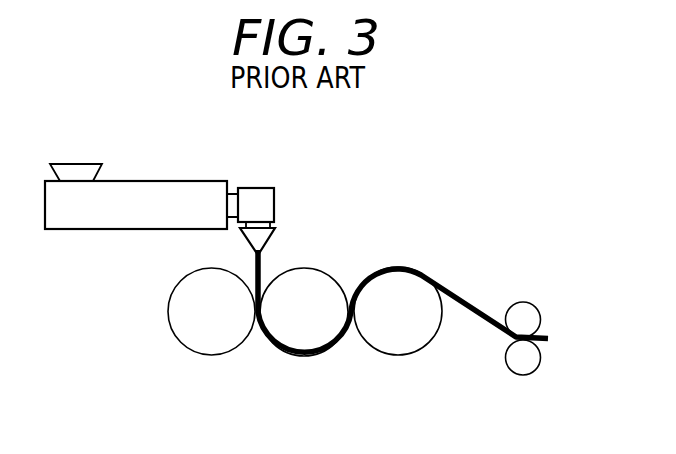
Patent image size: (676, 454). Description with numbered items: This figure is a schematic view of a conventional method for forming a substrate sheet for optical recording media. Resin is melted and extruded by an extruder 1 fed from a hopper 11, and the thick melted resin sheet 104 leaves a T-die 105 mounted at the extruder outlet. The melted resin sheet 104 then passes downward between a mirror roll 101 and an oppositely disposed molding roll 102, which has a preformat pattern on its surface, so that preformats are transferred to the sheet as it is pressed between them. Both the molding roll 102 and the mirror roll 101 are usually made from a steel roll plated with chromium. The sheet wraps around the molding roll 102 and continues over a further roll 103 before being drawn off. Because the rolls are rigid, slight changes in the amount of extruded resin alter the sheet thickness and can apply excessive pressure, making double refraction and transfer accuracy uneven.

The extruder 1 is at (87, 223).
The hopper 11 is at (92, 164).
The T-die 105 is at (272, 232).
The melted resin sheet 104 is at (262, 252).
The mirror roll 101 is at (178, 335).
The molding roll 102 is at (310, 342).
The third roll 103 is at (405, 340).